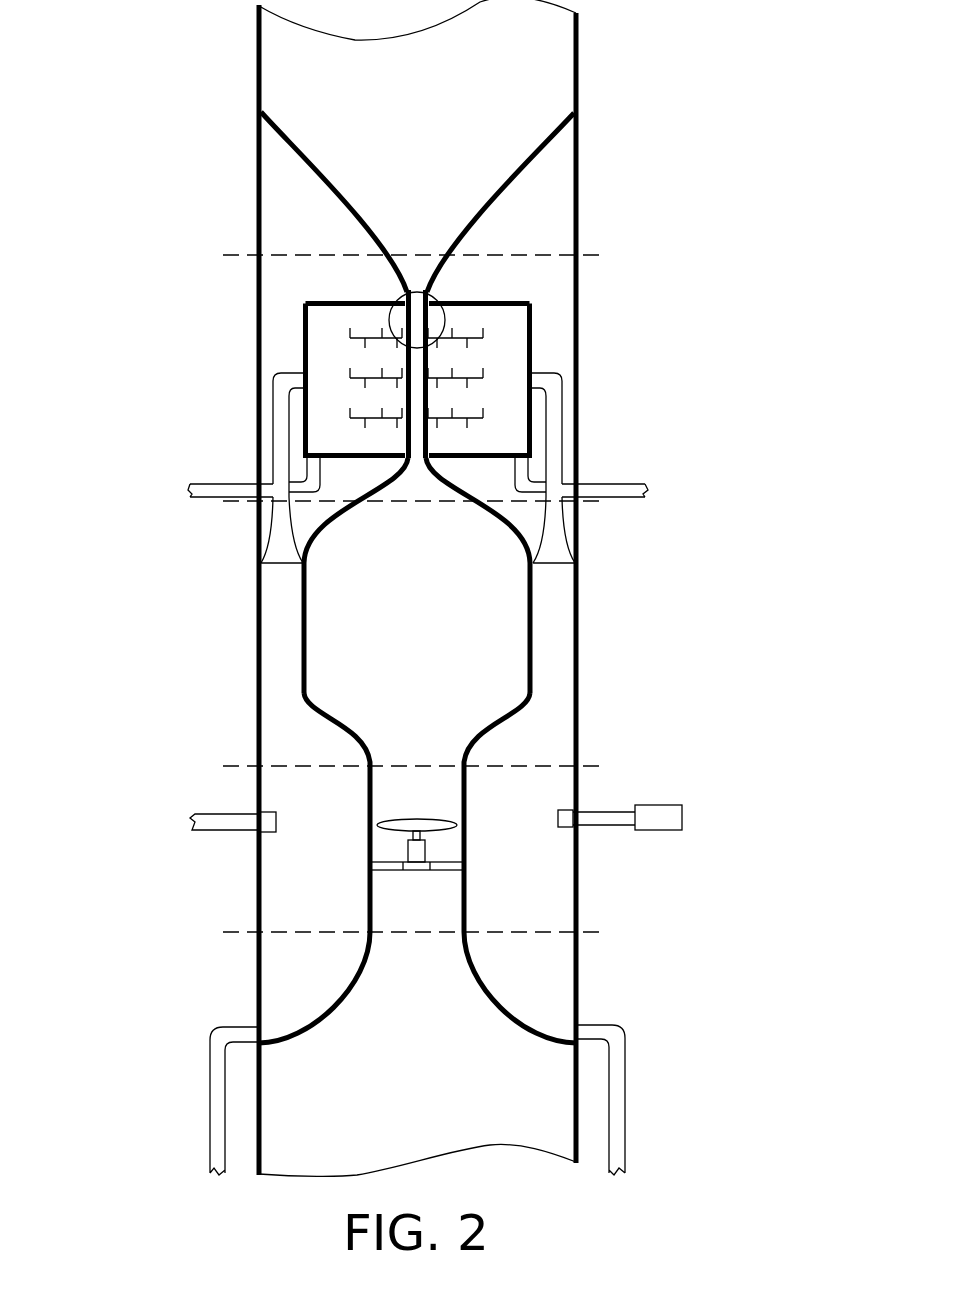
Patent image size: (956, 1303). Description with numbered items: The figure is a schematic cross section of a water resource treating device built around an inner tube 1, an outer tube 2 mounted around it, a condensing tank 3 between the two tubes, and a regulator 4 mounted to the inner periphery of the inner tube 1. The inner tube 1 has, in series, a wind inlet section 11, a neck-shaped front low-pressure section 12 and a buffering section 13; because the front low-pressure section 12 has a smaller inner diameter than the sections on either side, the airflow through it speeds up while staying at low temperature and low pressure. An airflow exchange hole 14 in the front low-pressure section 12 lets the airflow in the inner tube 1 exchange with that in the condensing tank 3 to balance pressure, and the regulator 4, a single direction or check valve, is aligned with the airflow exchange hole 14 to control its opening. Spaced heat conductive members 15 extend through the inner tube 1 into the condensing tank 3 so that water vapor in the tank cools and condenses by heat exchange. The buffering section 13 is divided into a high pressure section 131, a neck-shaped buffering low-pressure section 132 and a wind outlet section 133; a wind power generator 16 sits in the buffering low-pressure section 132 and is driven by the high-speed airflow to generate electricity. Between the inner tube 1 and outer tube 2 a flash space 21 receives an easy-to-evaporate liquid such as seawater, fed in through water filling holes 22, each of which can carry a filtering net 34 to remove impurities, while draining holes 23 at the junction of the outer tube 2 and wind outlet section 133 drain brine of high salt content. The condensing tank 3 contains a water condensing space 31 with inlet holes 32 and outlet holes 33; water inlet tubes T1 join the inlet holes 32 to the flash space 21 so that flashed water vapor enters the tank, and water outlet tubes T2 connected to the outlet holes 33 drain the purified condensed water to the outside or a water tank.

The inner tube 1 is at (362, 577).
The outer tube 2 is at (447, 588).
The condensing tank 3 is at (416, 372).
The regulator 4 is at (415, 292).
The wind inlet section 11 is at (332, 198).
The front low-pressure section 12 is at (402, 359).
The buffering section 13 is at (348, 750).
The airflow exchange hole 14 is at (538, 274).
The heat conductive members 15 is at (465, 377).
The generator 16 is at (420, 850).
The flash space 21 is at (571, 740).
The water filling hole 22 is at (556, 826).
The draining hole 23 is at (572, 1030).
The water condensing space 31 is at (309, 427).
The inlet hole 32 is at (536, 398).
The outlet hole 33 is at (528, 442).
The filtering net 34 is at (570, 815).
The high pressure section 131 is at (301, 660).
The buffering low-pressure section 132 is at (368, 808).
The wind outlet section 133 is at (313, 1017).
The water inlet tube T1 is at (555, 397).
The water outlet tube T2 is at (620, 490).